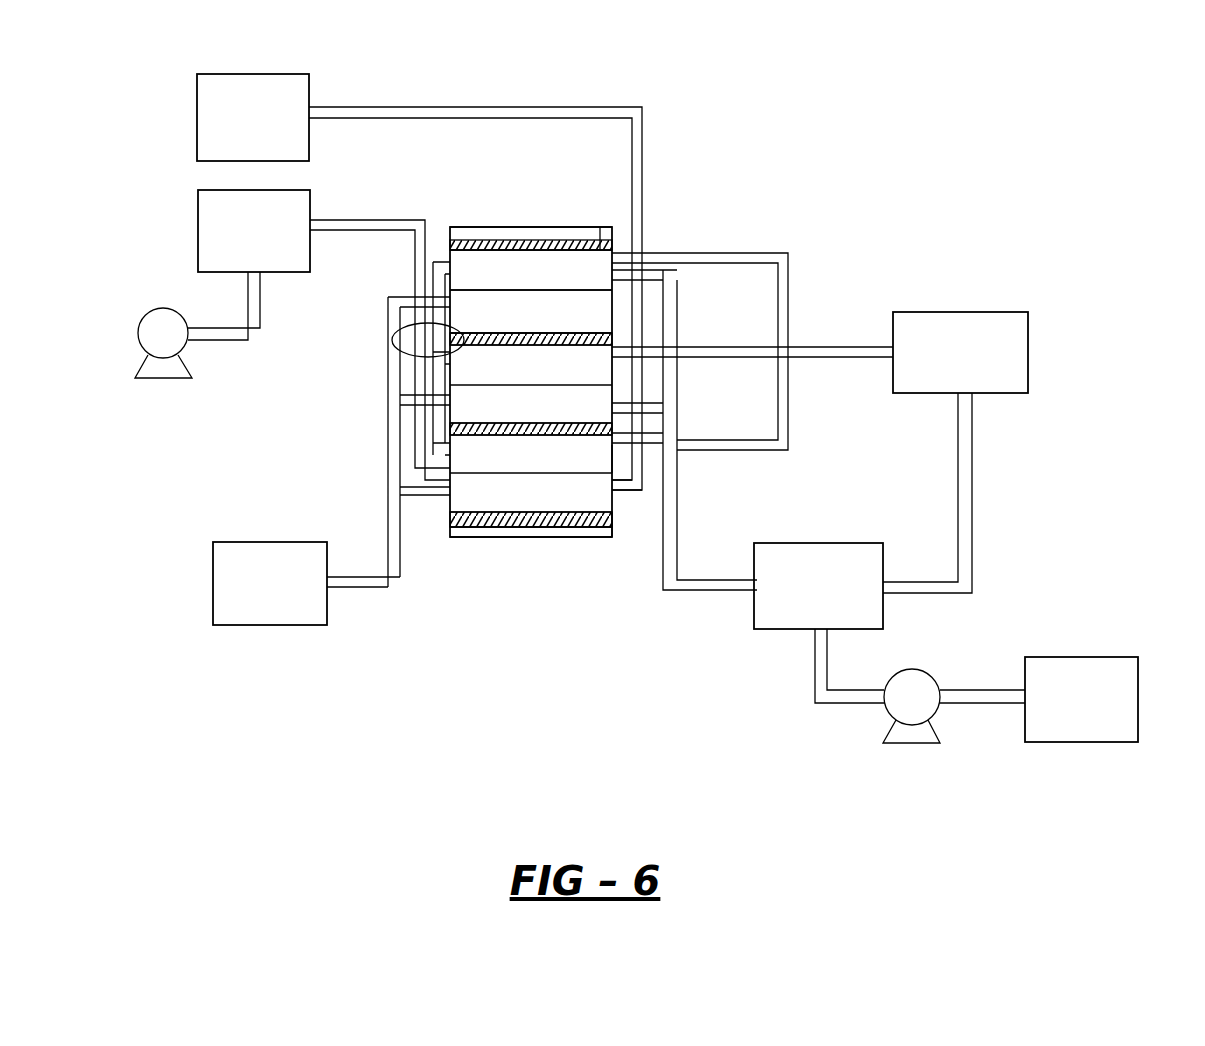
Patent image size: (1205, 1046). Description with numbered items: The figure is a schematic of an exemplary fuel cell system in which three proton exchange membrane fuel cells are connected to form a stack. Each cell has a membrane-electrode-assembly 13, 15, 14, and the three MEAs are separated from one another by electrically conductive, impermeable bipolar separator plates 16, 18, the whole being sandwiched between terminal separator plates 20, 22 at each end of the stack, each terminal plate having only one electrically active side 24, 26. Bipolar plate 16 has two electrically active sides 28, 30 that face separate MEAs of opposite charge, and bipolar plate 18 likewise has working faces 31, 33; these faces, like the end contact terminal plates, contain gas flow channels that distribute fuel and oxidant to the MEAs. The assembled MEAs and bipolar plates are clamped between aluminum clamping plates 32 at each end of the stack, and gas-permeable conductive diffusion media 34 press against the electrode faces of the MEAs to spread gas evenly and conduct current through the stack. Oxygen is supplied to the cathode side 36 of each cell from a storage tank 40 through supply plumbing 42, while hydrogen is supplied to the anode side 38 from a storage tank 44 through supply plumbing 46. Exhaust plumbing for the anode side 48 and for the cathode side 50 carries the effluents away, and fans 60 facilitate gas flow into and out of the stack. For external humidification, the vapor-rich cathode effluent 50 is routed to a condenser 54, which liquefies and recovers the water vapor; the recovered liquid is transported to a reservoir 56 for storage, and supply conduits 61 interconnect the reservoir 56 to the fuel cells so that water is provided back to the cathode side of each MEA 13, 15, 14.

The membrane-electrode-assembly 13 is at (645, 254).
The membrane-electrode-assembly 14 is at (622, 472).
The membrane-electrode-assembly 15 is at (675, 352).
The bipolar separator plate 16 is at (452, 336).
The bipolar separator plate 18 is at (455, 385).
The terminal separator plate 20 is at (496, 253).
The terminal separator plate 22 is at (450, 518).
The electrically active side 24 is at (605, 258).
The electrically active side 26 is at (632, 508).
The electrically active side 28 is at (405, 353).
The electrically active side 30 is at (415, 332).
The working face 31 is at (660, 420).
The aluminum clamping plate 32 is at (457, 237).
The working face 33 is at (625, 440).
The gas-permeable conductive diffusion media 34 is at (452, 246).
The cathode side 36 is at (538, 258).
The anode side 38 is at (583, 300).
The storage tank 40 is at (210, 190).
The supply plumbing 42 is at (348, 219).
The storage tank 44 is at (215, 85).
The supply plumbing 46 is at (395, 108).
The anode side exhaust plumbing 48 is at (357, 590).
The cathode side exhaust plumbing 50 is at (668, 592).
The condenser 54 is at (818, 543).
The reservoir 56 is at (978, 313).
The fan 60 is at (165, 312).
The supply conduit 61 is at (755, 440).